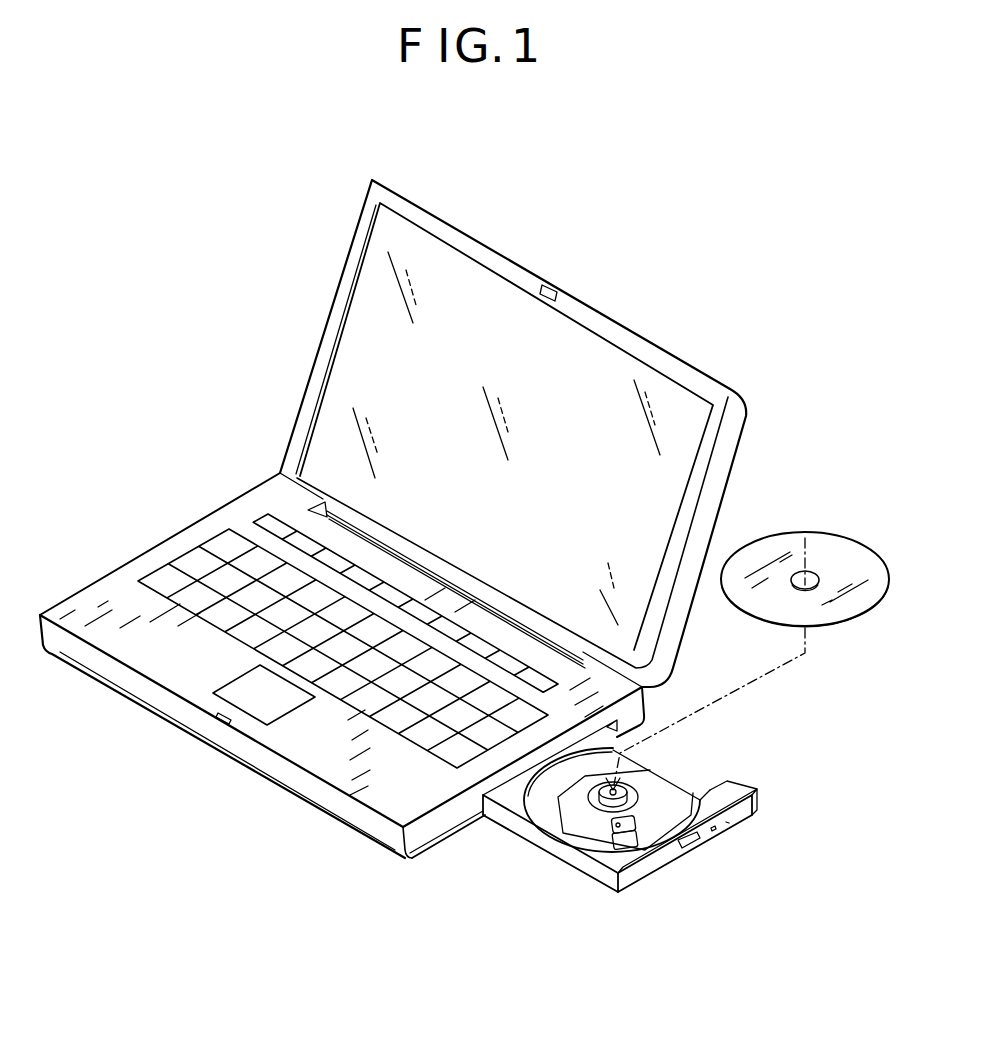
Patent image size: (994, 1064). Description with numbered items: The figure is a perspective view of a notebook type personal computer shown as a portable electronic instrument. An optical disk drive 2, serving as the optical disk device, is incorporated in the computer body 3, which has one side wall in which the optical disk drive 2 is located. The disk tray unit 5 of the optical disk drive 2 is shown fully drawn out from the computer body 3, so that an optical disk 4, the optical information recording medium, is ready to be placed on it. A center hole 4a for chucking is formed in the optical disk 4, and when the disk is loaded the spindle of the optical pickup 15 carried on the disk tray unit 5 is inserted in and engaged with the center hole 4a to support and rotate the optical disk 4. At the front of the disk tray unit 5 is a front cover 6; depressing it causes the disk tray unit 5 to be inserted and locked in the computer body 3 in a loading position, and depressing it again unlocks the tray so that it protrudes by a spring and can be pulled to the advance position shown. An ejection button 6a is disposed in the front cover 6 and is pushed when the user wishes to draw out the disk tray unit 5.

The optical disk drive 2 is at (668, 821).
The computer body 3 is at (153, 697).
The optical disk 4 is at (805, 535).
The center hole 4a is at (813, 572).
The disk tray unit 5 is at (670, 772).
The front cover 6 is at (697, 853).
The ejection button 6a is at (698, 843).
The optical pickup 15 is at (603, 823).